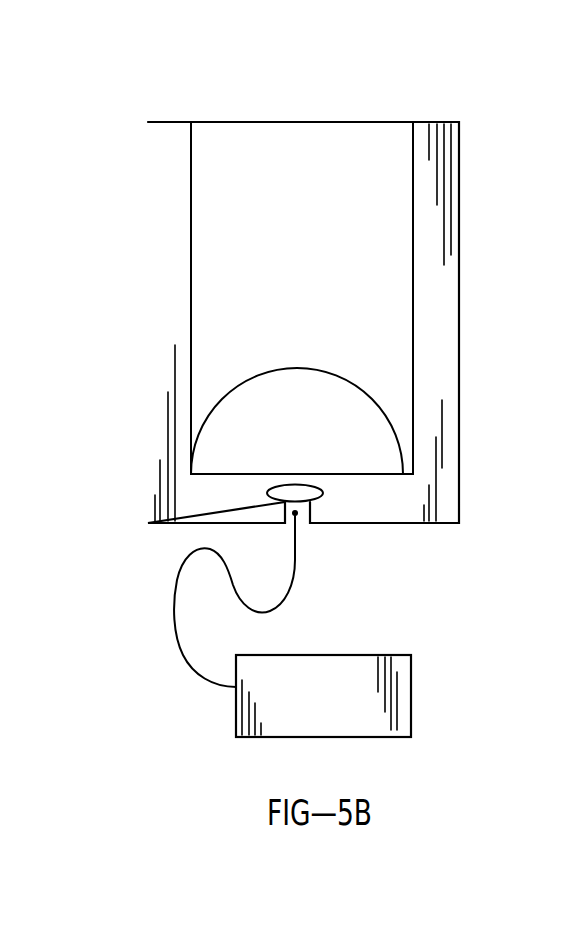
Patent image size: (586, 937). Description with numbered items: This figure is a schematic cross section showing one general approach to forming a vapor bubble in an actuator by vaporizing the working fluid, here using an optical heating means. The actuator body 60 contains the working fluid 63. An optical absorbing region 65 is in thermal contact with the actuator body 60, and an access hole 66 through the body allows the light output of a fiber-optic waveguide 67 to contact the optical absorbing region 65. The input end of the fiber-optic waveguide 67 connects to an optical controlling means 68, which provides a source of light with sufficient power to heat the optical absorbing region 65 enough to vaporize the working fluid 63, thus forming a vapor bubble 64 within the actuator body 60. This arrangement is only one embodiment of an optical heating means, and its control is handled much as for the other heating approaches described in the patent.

The actuator body 60 is at (147, 200).
The working fluid 63 is at (255, 143).
The vapor bubble 64 is at (252, 424).
The optical absorbing region 65 is at (267, 493).
The access hole 66 is at (311, 512).
The fiber-optic waveguide 67 is at (178, 601).
The optical controlling means 68 is at (377, 665).